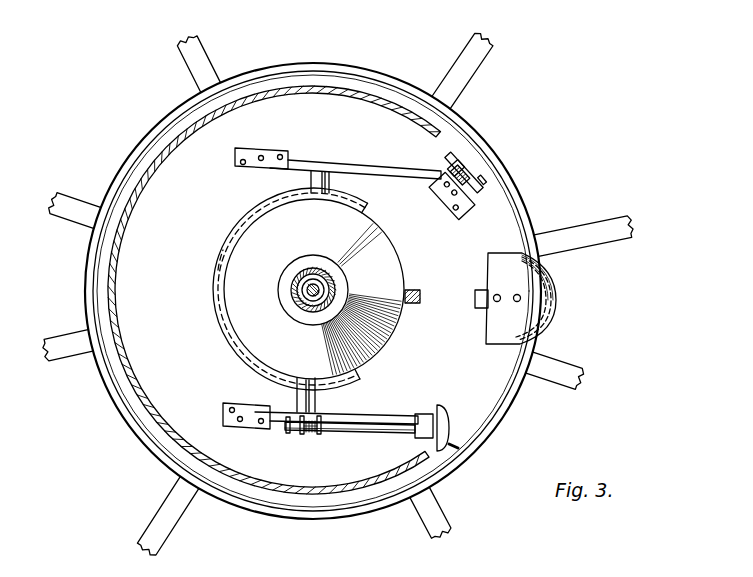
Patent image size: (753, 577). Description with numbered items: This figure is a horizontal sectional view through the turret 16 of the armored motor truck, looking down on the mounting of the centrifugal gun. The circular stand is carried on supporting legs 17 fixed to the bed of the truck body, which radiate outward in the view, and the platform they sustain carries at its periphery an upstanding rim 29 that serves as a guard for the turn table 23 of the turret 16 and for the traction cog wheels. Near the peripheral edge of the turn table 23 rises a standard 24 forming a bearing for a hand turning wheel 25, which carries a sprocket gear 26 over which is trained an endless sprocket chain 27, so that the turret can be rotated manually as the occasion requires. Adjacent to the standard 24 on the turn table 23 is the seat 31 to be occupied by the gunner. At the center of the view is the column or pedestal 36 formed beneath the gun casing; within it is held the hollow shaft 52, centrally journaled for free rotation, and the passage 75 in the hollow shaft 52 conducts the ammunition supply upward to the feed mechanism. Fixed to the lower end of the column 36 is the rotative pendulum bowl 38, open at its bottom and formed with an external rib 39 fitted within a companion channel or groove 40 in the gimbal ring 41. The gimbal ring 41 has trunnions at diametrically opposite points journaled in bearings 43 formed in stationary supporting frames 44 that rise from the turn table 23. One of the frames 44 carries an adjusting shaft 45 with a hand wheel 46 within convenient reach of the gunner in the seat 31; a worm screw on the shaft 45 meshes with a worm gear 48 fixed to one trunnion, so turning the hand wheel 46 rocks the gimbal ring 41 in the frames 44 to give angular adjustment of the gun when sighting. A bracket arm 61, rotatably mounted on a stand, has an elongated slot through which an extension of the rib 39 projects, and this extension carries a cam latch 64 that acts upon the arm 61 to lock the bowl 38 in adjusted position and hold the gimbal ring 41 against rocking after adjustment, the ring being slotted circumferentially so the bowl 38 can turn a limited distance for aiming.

The turret 16 is at (357, 487).
The supporting legs 17 is at (70, 206).
The turn table 23 is at (470, 166).
The standard 24 is at (450, 203).
The hand turning wheel 25 is at (455, 164).
The sprocket gear 26 is at (488, 178).
The endless sprocket chain 27 is at (448, 169).
The upstanding rim 29 is at (402, 81).
The seat 31 is at (490, 262).
The column or pedestal 36 is at (295, 273).
The rotative pendulum bowl 38 is at (258, 333).
The external rib 39 is at (226, 236).
The channel or groove 40 is at (222, 266).
The gimbal ring 41 is at (243, 221).
The bearings 43 is at (331, 185).
The stationary supporting frames 44 is at (296, 167).
The adjusting shaft 45 is at (356, 431).
The hand wheel 46 is at (446, 408).
The worm gear 48 is at (304, 434).
The hollow shaft 52 is at (298, 295).
The bracket arm 61 is at (419, 293).
The cam latch 64 is at (492, 274).
The passage 75 is at (324, 298).